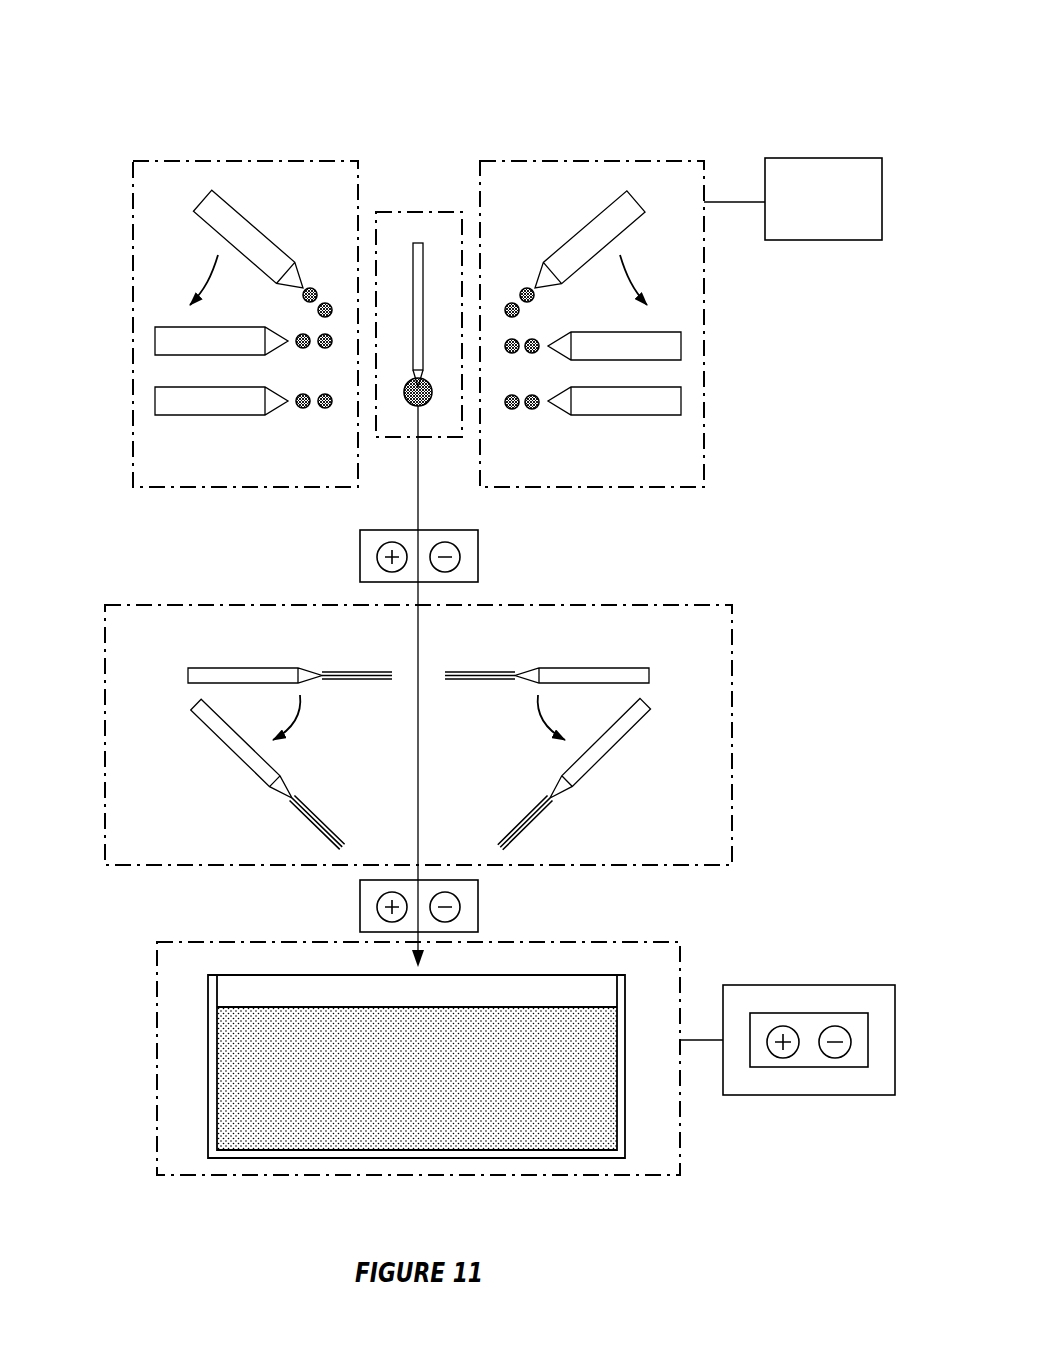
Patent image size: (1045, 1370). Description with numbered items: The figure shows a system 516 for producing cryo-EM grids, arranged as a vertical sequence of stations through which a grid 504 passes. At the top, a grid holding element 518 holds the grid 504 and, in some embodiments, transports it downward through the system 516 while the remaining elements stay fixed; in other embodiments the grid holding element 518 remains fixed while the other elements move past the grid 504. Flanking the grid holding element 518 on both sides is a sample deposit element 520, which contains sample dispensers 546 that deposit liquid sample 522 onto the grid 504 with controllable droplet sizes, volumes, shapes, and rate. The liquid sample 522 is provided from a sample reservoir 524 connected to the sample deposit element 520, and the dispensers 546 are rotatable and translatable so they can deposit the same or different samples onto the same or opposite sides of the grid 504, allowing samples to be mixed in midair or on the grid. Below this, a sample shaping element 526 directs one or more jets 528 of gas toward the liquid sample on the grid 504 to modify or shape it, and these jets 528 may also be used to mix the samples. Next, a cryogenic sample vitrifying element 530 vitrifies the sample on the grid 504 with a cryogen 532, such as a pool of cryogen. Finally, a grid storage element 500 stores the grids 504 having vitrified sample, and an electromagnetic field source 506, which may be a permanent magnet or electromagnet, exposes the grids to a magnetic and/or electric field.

The grid storage element 500 is at (830, 1097).
The grid 504 is at (428, 406).
The electromagnetic field source 506 is at (477, 552).
The system 516 is at (435, 80).
The grid holding element 518 is at (402, 207).
The sample deposit element 520 is at (418, 311).
The liquid sample 522 is at (325, 303).
The sample reservoir 524 is at (833, 242).
The sample shaping element 526 is at (418, 699).
The jets of gas 528 is at (318, 813).
The cryogenic sample vitrifying element 530 is at (418, 1033).
The cryogen 532 is at (247, 1075).
The sample dispensers 546 is at (155, 401).